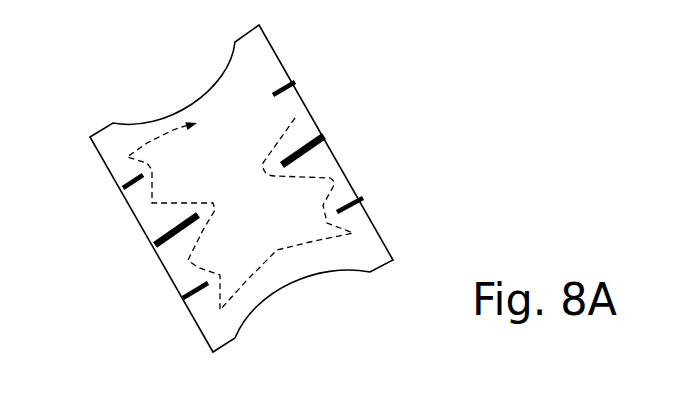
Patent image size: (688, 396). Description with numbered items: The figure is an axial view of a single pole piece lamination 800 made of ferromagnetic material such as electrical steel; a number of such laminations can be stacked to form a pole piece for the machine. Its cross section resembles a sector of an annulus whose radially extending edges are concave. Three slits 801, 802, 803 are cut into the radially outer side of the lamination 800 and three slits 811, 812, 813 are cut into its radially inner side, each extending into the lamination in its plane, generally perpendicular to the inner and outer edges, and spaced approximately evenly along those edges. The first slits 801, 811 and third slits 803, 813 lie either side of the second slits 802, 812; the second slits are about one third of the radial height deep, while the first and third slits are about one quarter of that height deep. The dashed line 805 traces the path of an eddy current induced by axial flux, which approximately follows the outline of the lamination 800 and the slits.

The lamination 800 is at (374, 41).
The first slit 801 is at (295, 83).
The second slit 802 is at (330, 140).
The third slit 803 is at (362, 200).
The eddy current path 805 is at (278, 250).
The first slit 811 is at (123, 188).
The second slit 812 is at (155, 244).
The third slit 813 is at (183, 298).